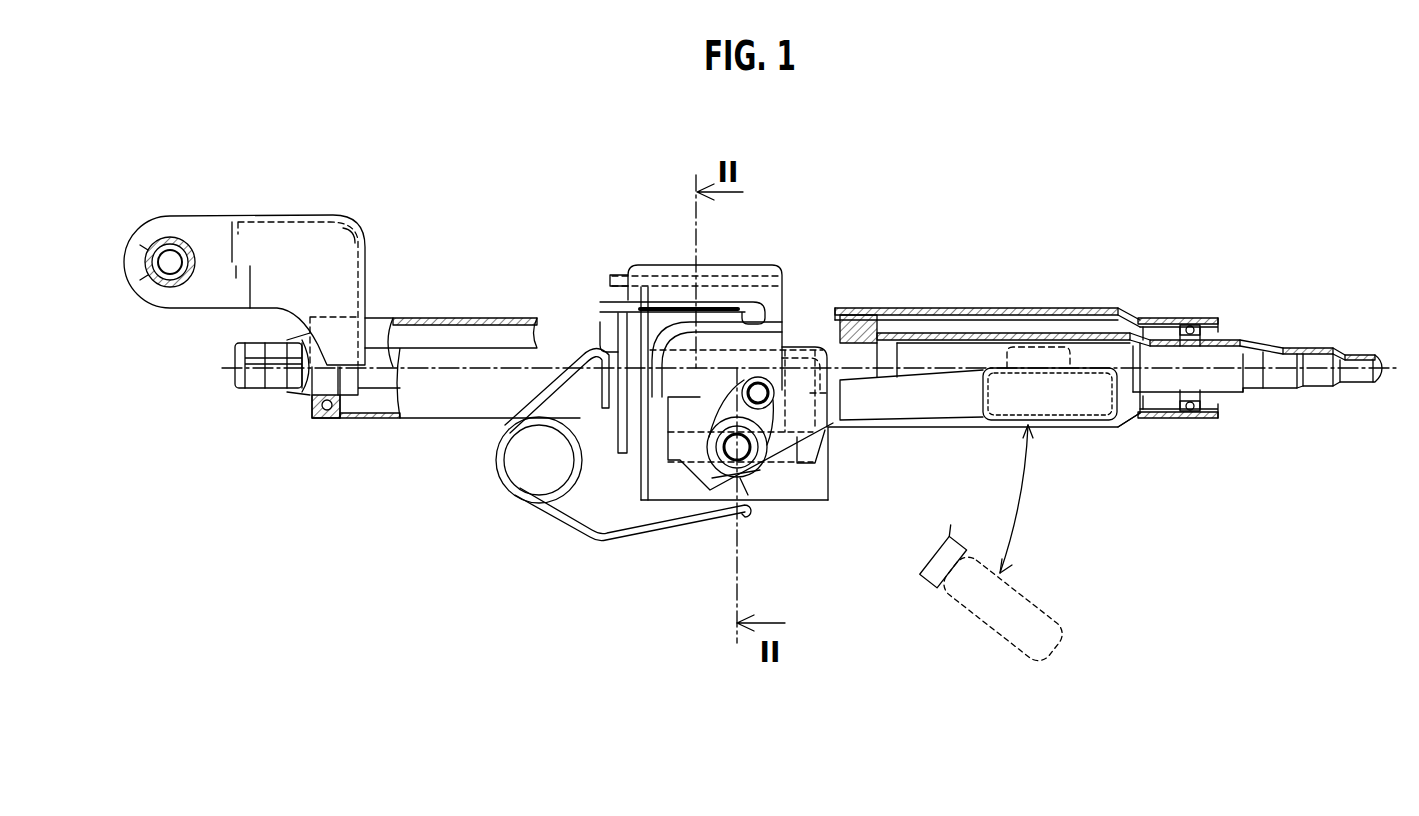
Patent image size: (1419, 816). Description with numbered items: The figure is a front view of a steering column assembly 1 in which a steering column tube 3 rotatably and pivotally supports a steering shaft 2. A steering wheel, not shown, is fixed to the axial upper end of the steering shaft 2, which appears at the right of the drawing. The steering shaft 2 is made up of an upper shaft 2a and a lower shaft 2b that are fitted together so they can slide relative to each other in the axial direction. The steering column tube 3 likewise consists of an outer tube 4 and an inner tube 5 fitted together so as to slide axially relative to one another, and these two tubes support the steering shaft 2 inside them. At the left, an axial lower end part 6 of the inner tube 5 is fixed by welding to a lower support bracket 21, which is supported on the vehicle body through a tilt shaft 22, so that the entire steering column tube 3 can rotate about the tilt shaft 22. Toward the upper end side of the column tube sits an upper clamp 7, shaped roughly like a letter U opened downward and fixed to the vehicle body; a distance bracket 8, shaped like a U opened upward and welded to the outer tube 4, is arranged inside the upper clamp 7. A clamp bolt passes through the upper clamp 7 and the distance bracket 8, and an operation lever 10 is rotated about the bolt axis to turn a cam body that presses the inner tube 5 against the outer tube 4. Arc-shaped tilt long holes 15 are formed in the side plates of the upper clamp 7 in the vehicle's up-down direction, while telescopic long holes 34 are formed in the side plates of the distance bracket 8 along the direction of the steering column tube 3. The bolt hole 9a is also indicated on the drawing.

The steering column assembly 1 is at (1057, 238).
The steering shaft 2 is at (1271, 331).
The upper shaft 2a is at (1237, 340).
The lower shaft 2b is at (377, 380).
The steering column tube 3 is at (991, 296).
The outer tube 4 is at (915, 307).
The inner tube 5 is at (860, 306).
The axial lower end part 6 is at (375, 323).
The upper clamp 7 is at (693, 467).
The distance bracket 8 is at (812, 493).
The bolt hole 9a is at (747, 453).
The operation lever 10 is at (995, 407).
The tilt long holes 15 is at (725, 478).
The lower support bracket 21 is at (221, 222).
The tilt shaft 22 is at (167, 268).
The telescopic long holes 34 is at (797, 452).